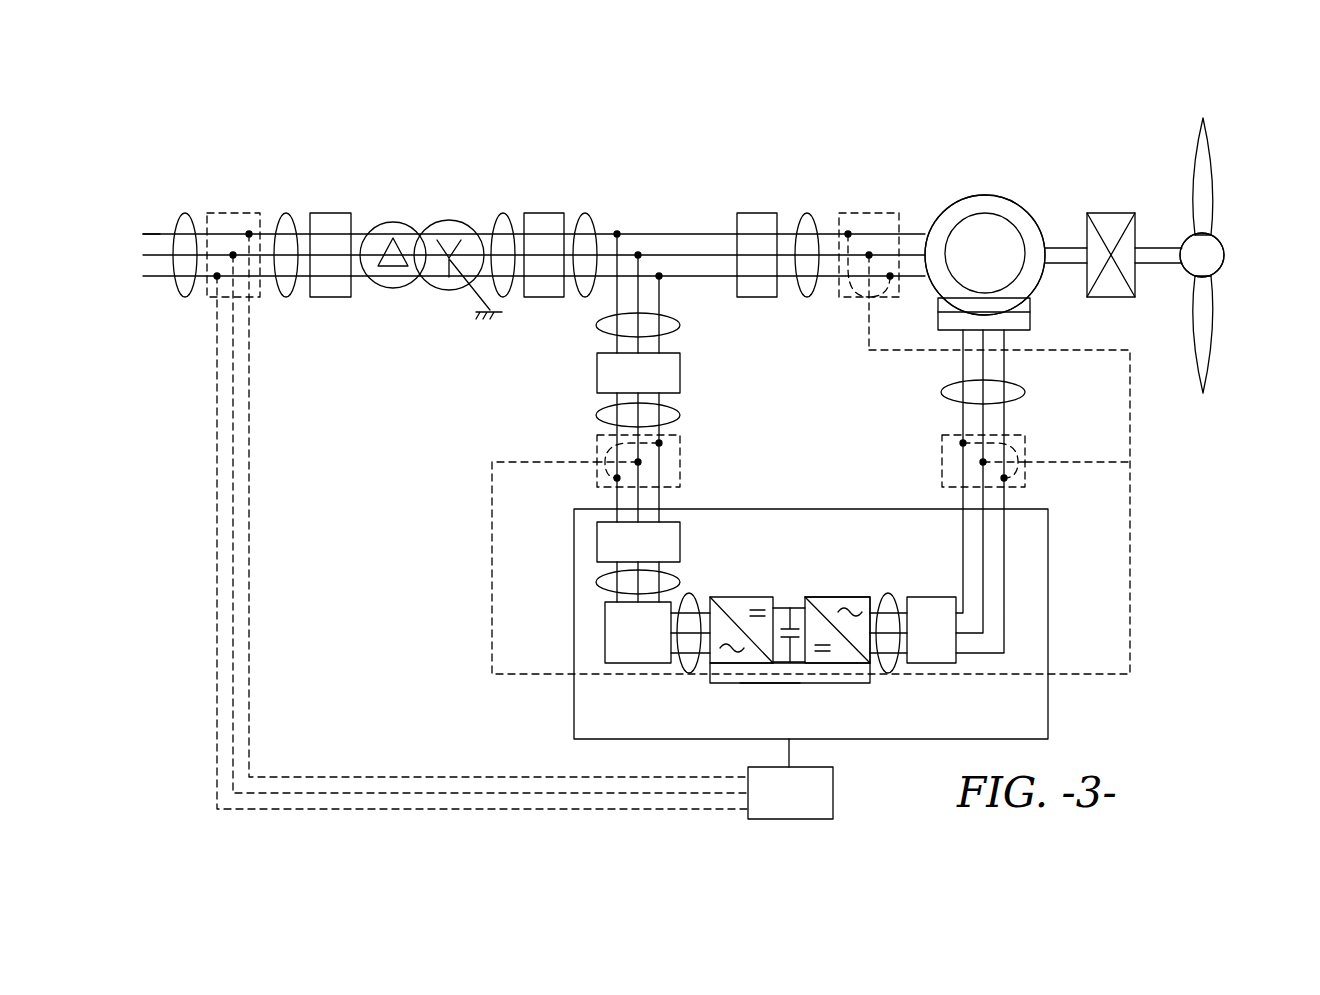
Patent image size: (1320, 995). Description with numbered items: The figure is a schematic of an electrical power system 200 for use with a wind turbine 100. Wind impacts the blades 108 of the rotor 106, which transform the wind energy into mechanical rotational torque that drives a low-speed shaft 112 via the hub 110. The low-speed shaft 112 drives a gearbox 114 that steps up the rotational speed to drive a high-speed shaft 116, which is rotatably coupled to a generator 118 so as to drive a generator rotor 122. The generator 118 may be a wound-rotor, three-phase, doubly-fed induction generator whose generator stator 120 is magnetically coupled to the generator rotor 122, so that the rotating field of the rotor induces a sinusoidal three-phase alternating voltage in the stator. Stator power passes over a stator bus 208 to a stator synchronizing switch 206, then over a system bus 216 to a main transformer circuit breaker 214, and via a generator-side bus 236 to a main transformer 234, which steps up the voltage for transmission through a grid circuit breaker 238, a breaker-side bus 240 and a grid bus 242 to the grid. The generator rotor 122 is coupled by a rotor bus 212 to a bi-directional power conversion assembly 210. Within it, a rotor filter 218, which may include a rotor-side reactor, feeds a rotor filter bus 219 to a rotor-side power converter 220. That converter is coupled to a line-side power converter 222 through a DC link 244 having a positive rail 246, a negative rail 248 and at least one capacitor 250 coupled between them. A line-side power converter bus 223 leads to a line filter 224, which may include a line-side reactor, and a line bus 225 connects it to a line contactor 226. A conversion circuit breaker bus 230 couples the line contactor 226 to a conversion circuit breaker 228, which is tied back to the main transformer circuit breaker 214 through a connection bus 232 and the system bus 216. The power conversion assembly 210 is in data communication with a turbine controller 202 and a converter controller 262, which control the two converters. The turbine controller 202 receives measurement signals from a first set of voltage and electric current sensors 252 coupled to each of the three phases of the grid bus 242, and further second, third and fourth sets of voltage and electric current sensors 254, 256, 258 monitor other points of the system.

The wind turbine 100 is at (1170, 118).
The rotor 106 is at (1228, 228).
The blades 108 is at (1215, 172).
The hub 110 is at (1225, 253).
The low-speed shaft 112 is at (1152, 248).
The gearbox 114 is at (1110, 213).
The high-speed shaft 116 is at (1070, 248).
The generator 118 is at (978, 172).
The generator stator 120 is at (1010, 198).
The generator rotor 122 is at (963, 232).
The electrical power system 200 is at (388, 136).
The turbine controller 202 is at (790, 779).
The stator synchronizing switch 206 is at (757, 213).
The stator bus 208 is at (808, 213).
The power conversion assembly 210 is at (1048, 598).
The rotor bus 212 is at (1025, 392).
The main transformer circuit breaker 214 is at (545, 213).
The system bus 216 is at (590, 213).
The rotor filter 218 is at (921, 597).
The rotor filter bus 219 is at (888, 593).
The rotor-side power converter 220 is at (870, 663).
The line-side power converter 222 is at (710, 665).
The line-side power converter bus 223 is at (689, 593).
The line filter 224 is at (605, 642).
The line bus 225 is at (597, 584).
The line contactor 226 is at (597, 542).
The conversion circuit breaker 228 is at (680, 372).
The conversion circuit breaker bus 230 is at (680, 415).
The connection bus 232 is at (680, 325).
The main transformer 234 is at (455, 220).
The generator-side bus 236 is at (503, 213).
The grid circuit breaker 238 is at (338, 213).
The breaker-side bus 240 is at (292, 212).
The grid bus 242 is at (190, 212).
The DC link 244 is at (806, 564).
The positive rail 246 is at (796, 606).
The negative rail 248 is at (796, 683).
The capacitor 250 is at (789, 627).
The first set of voltage and electric current sensors 252 is at (235, 213).
The second set of voltage and electric current sensors 254 is at (868, 210).
The third set of voltage and electric current sensors 256 is at (938, 462).
The fourth set of voltage and electric current sensors 258 is at (684, 462).
The converter controller 262 is at (836, 683).